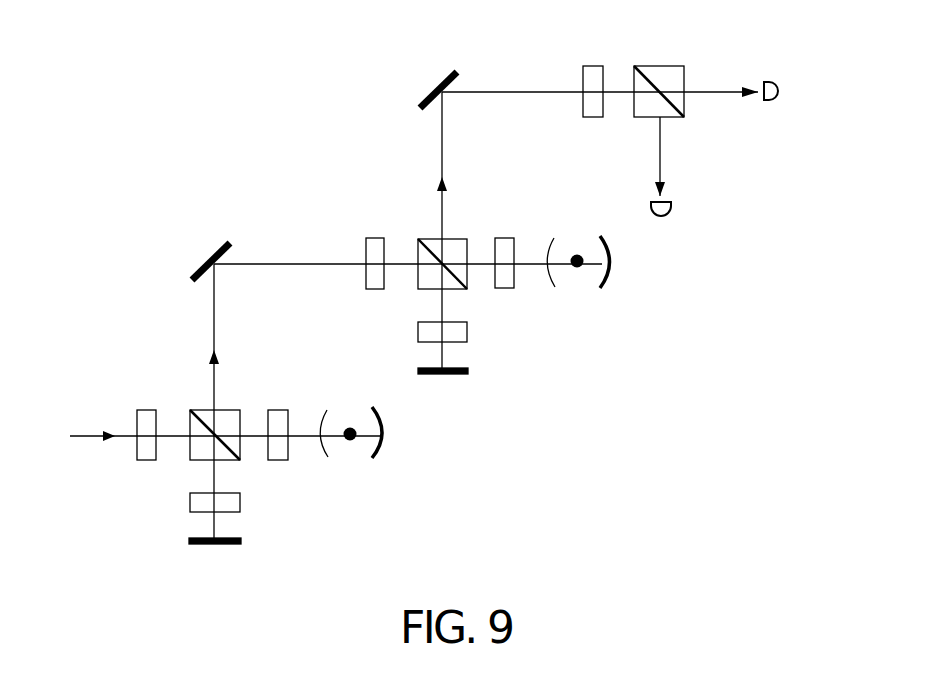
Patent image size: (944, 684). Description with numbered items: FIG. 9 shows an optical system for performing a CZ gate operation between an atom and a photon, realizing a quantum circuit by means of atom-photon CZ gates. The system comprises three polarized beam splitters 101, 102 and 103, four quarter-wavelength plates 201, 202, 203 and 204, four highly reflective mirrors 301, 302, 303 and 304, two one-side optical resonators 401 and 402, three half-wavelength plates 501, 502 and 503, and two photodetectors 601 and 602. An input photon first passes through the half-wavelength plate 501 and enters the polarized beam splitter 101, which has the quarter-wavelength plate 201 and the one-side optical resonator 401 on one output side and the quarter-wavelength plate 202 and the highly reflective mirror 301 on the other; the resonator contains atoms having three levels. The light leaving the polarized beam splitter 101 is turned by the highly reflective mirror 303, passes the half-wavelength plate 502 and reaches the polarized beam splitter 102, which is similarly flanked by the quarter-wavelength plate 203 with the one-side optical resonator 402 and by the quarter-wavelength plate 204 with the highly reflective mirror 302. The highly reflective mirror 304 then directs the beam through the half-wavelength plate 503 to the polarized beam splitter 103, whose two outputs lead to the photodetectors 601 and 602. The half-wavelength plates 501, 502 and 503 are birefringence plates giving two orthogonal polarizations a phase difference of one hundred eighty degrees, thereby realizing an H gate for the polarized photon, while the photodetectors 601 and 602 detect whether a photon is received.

The polarized beam splitter 101 is at (233, 408).
The polarized beam splitter 102 is at (455, 237).
The polarized beam splitter 103 is at (672, 64).
The quarter-wavelength plate 201 is at (283, 463).
The quarter-wavelength plate 202 is at (188, 503).
The quarter-wavelength plate 203 is at (508, 292).
The quarter-wavelength plate 204 is at (415, 333).
The highly reflective mirror 301 is at (236, 547).
The highly reflective mirror 302 is at (462, 377).
The highly reflective mirror 303 is at (228, 240).
The highly reflective mirror 304 is at (458, 70).
The one-side optical resonator 401 is at (350, 462).
The one-side optical resonator 402 is at (576, 290).
The half-wavelength plate 501 is at (152, 408).
The half-wavelength plate 502 is at (363, 292).
The half-wavelength plate 503 is at (592, 119).
The photodetector 601 is at (660, 220).
The photodetector 602 is at (772, 103).